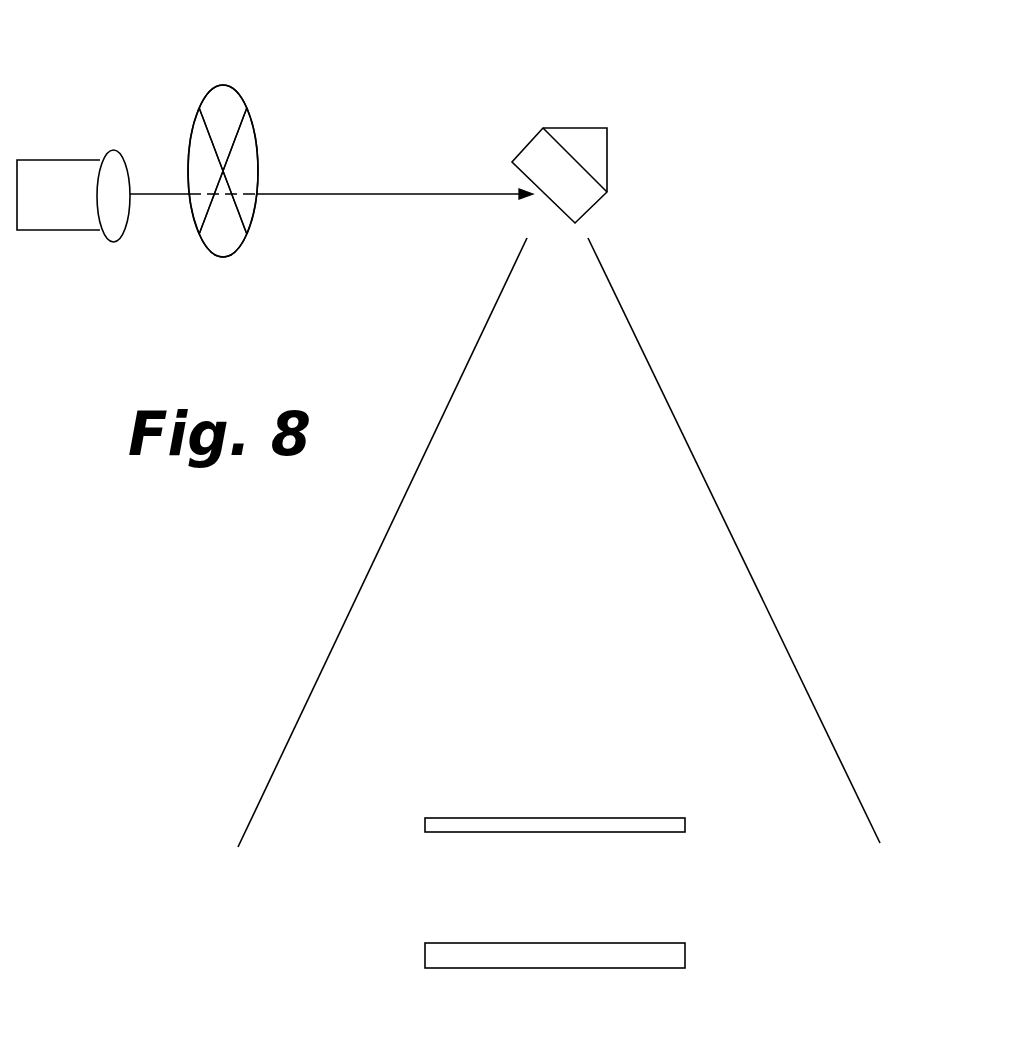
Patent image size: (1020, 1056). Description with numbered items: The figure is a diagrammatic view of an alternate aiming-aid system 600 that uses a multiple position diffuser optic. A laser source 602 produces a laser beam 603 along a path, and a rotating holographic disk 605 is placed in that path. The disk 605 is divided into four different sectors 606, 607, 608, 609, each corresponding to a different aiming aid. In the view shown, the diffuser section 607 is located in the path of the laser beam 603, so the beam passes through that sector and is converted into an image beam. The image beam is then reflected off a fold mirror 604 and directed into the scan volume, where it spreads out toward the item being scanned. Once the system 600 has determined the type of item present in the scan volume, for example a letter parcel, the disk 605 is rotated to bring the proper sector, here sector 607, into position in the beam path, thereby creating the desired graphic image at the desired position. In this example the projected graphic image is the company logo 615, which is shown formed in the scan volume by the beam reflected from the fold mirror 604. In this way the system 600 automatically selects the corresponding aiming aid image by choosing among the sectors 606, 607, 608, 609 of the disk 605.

The system 600 is at (437, 82).
The laser source 602 is at (55, 167).
The laser beam 603 is at (157, 197).
The fold mirror 604 is at (538, 155).
The rotating holographic disk 605 is at (257, 88).
The sector 606 is at (200, 160).
The diffuser section 607 is at (230, 237).
The sector 608 is at (247, 155).
The sector 609 is at (220, 105).
The company logo 615 is at (627, 987).